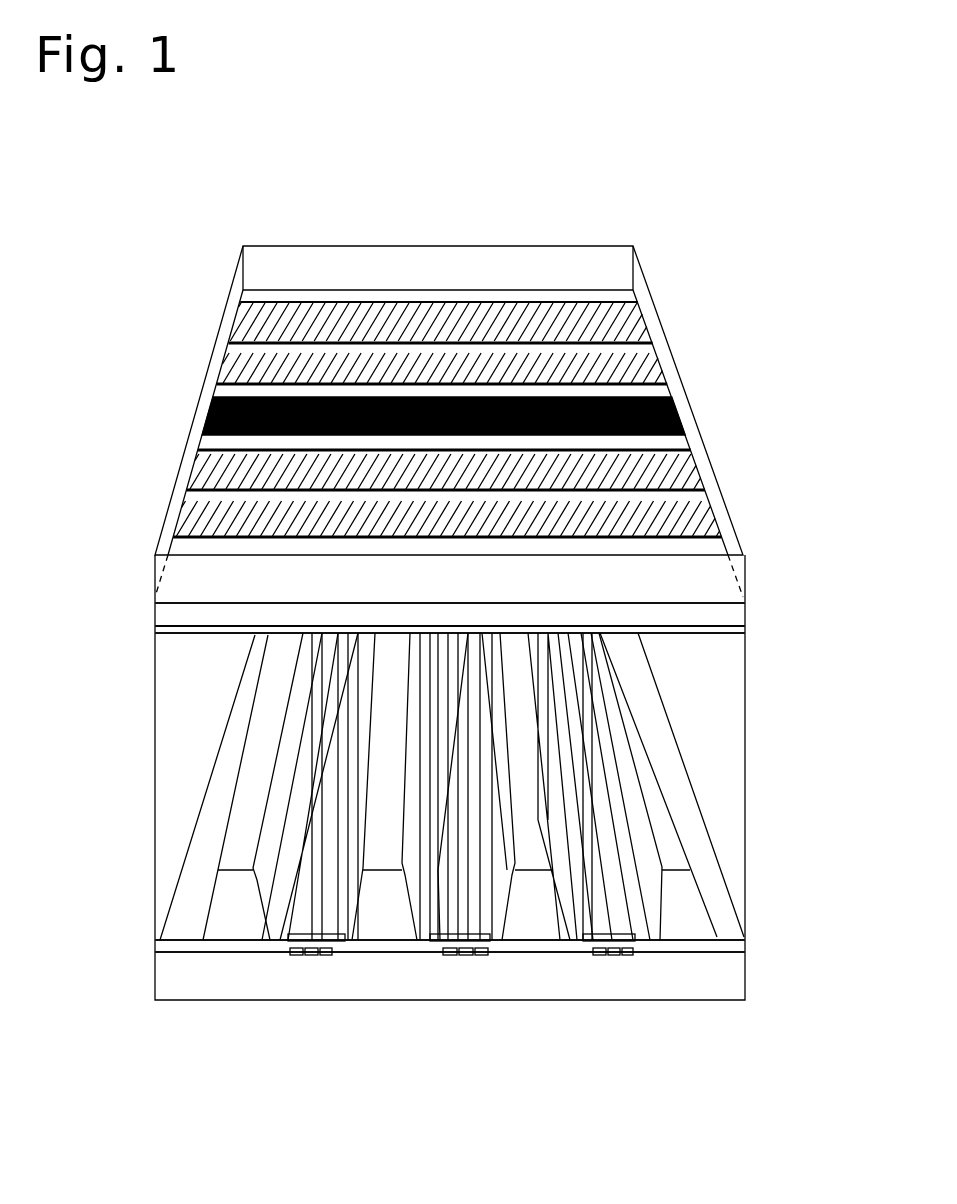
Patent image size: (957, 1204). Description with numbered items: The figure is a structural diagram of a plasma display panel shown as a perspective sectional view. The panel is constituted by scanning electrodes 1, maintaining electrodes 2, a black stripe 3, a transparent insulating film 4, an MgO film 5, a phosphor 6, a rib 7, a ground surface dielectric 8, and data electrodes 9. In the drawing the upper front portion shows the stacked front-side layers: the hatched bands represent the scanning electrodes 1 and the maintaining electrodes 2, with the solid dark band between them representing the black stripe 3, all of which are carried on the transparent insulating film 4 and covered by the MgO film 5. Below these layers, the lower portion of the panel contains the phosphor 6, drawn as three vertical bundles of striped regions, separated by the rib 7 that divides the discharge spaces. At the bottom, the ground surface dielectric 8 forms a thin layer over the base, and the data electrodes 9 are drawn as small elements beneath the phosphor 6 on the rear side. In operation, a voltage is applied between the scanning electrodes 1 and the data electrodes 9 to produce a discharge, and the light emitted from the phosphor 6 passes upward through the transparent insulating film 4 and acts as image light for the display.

The scanning electrodes 1 is at (672, 516).
The maintaining electrodes 2 is at (672, 471).
The black stripe 3 is at (672, 404).
The transparent insulating film 4 is at (716, 606).
The MgO film 5 is at (735, 628).
The phosphor 6 is at (628, 832).
The rib 7 is at (680, 900).
The ground surface dielectric 8 is at (712, 946).
The data electrodes 9 is at (613, 953).